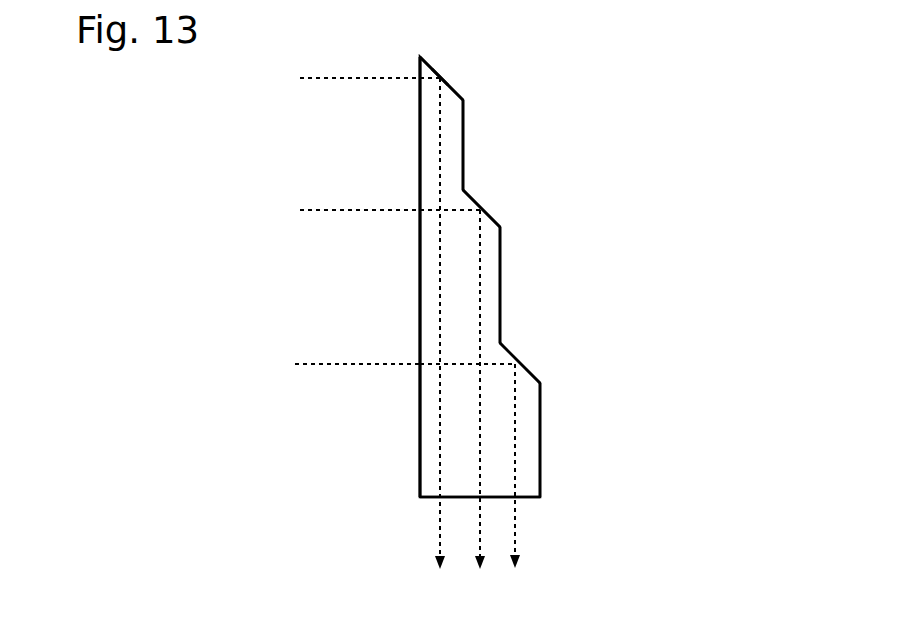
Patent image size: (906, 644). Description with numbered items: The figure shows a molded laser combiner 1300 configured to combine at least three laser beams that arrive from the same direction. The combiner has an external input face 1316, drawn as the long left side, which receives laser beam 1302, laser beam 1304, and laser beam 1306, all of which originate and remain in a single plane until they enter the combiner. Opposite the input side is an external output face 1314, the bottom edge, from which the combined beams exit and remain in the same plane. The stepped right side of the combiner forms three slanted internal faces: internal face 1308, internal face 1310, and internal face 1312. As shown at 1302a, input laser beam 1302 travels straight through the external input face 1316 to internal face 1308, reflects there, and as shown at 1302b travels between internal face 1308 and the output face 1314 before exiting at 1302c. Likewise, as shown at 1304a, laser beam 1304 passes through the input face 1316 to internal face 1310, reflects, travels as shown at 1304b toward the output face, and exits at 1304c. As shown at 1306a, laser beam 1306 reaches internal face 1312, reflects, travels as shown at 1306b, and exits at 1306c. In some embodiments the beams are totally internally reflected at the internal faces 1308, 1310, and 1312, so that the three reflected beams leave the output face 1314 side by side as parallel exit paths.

The molded laser combiner 1300 is at (690, 246).
The laser beam 1302 is at (303, 81).
The laser beam path segment 1302a is at (428, 77).
The laser beam path segment 1302b is at (440, 163).
The laser beam exit 1302c is at (437, 547).
The laser beam 1304 is at (303, 213).
The laser beam path segment 1304a is at (434, 207).
The laser beam path segment 1304b is at (480, 293).
The laser beam exit 1304c is at (482, 547).
The laser beam 1306 is at (305, 367).
The laser beam path segment 1306a is at (461, 362).
The laser beam path segment 1306b is at (514, 455).
The laser beam exit 1306c is at (517, 523).
The internal face 1308 is at (440, 78).
The internal face 1310 is at (481, 209).
The internal face 1312 is at (516, 363).
The external output face 1314 is at (421, 499).
The external input face 1316 is at (420, 465).